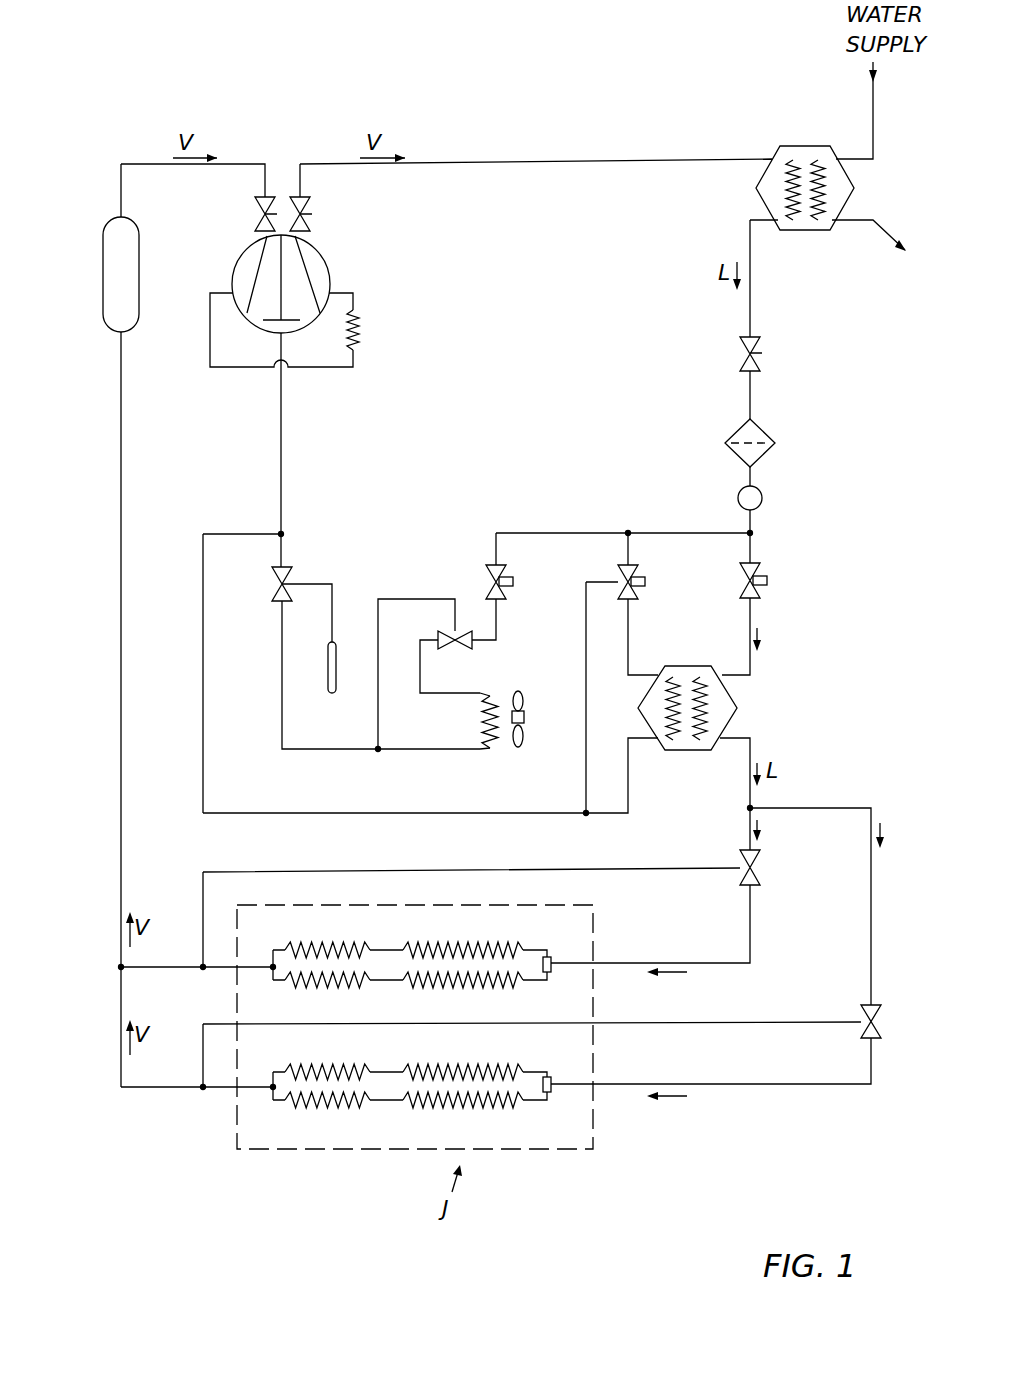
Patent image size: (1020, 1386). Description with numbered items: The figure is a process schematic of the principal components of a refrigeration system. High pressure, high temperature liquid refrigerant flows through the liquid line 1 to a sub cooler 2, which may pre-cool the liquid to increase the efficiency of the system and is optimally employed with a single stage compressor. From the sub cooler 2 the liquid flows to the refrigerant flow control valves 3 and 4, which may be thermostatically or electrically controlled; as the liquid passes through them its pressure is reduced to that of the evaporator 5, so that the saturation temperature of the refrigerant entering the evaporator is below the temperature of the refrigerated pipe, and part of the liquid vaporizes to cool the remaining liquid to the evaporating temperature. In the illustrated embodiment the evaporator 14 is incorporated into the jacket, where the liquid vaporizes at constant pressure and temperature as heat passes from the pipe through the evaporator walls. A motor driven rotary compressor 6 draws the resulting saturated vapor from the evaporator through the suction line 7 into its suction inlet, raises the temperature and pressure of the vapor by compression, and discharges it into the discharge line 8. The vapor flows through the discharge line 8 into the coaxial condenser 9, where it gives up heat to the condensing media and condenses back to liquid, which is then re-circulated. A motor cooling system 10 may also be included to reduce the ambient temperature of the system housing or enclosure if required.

The liquid line 1 is at (750, 613).
The sub cooler 2 is at (737, 708).
The refrigerant flow control valve 3 is at (760, 877).
The refrigerant flow control valve 4 is at (881, 1022).
The evaporator 5 is at (292, 1063).
The motor driven rotary compressor 6 is at (327, 268).
The suction line 7 is at (121, 685).
The discharge line 8 is at (545, 160).
The coaxial condenser 9 is at (807, 143).
The motor cooling system 10 is at (503, 672).
The evaporator 14 is at (597, 1150).